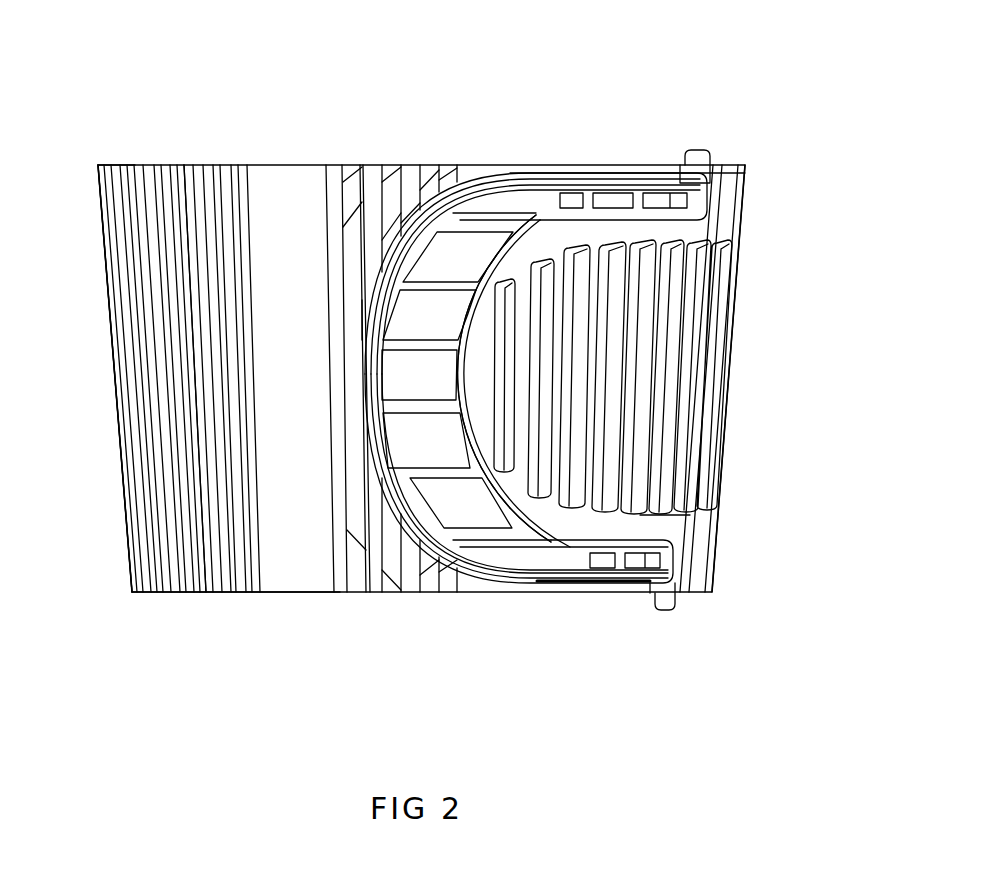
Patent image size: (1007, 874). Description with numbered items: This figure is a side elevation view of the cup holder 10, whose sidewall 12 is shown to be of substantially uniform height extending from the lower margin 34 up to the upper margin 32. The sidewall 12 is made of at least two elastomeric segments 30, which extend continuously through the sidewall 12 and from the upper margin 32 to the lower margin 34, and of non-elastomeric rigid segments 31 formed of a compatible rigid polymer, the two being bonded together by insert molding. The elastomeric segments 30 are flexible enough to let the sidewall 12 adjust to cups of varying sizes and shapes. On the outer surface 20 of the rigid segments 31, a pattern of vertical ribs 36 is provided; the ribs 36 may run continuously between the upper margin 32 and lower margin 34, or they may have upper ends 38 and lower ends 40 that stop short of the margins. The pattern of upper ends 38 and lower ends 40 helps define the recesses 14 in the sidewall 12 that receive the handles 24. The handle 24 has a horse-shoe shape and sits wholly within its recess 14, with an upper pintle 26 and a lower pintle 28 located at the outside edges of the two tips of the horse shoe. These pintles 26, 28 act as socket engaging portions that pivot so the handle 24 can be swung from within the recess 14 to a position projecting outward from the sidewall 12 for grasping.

The cup holder 10 is at (122, 83).
The sidewall 12 is at (115, 393).
The recesses 14 is at (624, 525).
The outer surface 20 is at (470, 180).
The handle 24 is at (524, 203).
The upper pintle 26 is at (700, 152).
The lower pintle 28 is at (670, 610).
The elastomeric segments 30 is at (303, 570).
The non-elastomeric rigid segments 31 is at (192, 165).
The upper margin 32 is at (113, 165).
The lower margin 34 is at (164, 596).
The vertical ribs 36 is at (160, 259).
The upper ends 38 is at (693, 245).
The lower ends 40 is at (362, 318).